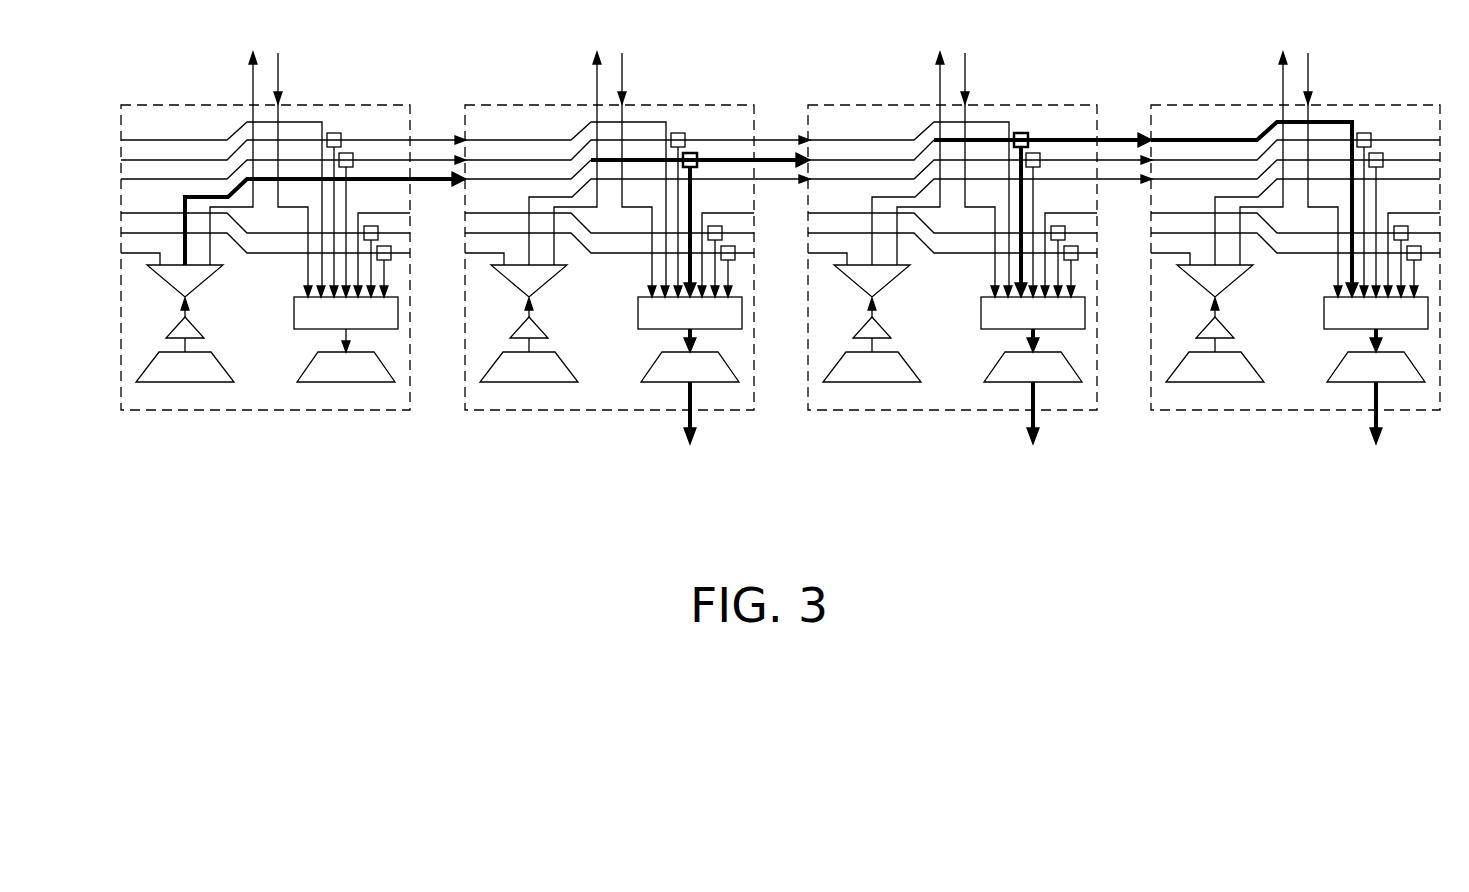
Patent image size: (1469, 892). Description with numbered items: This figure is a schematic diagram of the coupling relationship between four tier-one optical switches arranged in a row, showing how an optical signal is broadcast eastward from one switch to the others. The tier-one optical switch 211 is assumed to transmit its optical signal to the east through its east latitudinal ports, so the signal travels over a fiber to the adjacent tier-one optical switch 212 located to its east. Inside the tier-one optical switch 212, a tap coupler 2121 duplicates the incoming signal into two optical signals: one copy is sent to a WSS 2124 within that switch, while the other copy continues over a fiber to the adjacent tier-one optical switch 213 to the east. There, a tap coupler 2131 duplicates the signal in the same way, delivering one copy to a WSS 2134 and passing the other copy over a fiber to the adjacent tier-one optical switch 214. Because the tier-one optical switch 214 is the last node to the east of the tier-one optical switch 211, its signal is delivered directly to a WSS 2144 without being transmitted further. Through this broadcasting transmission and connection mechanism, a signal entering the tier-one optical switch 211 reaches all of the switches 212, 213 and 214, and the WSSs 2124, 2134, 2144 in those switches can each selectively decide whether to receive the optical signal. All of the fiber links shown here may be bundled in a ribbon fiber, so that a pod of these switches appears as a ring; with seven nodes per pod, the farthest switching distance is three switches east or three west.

The tier-1 optical switch 211 is at (172, 103).
The tier-1 optical switch 212 is at (516, 103).
The tier-1 optical switch 213 is at (858, 103).
The tier-1 optical switch 214 is at (1200, 103).
The tap coupler 2121 is at (690, 152).
The tap coupler 2131 is at (1022, 132).
The WSS 2124 is at (638, 315).
The WSS 2134 is at (981, 315).
The WSS 2144 is at (1324, 317).